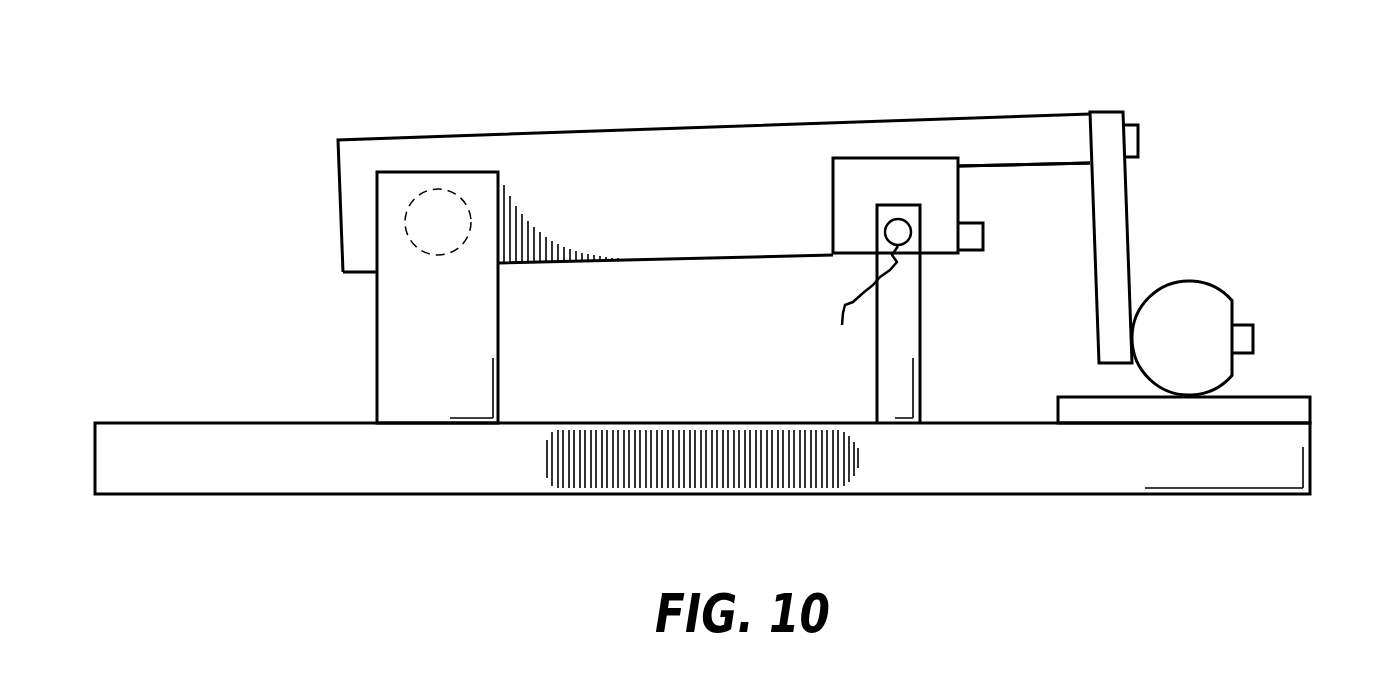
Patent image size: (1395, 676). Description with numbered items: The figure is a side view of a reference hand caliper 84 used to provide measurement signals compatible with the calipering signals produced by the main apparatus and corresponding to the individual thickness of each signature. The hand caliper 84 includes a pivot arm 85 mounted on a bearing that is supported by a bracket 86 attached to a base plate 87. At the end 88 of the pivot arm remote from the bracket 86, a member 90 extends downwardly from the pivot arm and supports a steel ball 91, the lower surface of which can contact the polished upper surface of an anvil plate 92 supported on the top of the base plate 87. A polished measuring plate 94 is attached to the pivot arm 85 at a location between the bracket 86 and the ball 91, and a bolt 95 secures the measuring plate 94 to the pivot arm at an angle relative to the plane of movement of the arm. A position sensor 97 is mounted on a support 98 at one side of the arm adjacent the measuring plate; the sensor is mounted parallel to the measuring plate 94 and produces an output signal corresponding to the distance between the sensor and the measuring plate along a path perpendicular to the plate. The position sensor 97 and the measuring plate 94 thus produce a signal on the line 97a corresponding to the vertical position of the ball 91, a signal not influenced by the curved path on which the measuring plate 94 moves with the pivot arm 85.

The hand caliper 84 is at (338, 98).
The pivot arm 85 is at (665, 147).
The bracket 86 is at (377, 333).
The base plate 87 is at (196, 421).
The end of the pivot arm 88 is at (1057, 115).
The member 90 is at (1131, 231).
The steel ball 91 is at (1213, 300).
The anvil plate 92 is at (1288, 396).
The measuring plate 94 is at (849, 178).
The bolt 95 is at (985, 238).
The position sensor 97 is at (888, 233).
The line 97a is at (893, 265).
The support 98 is at (921, 348).